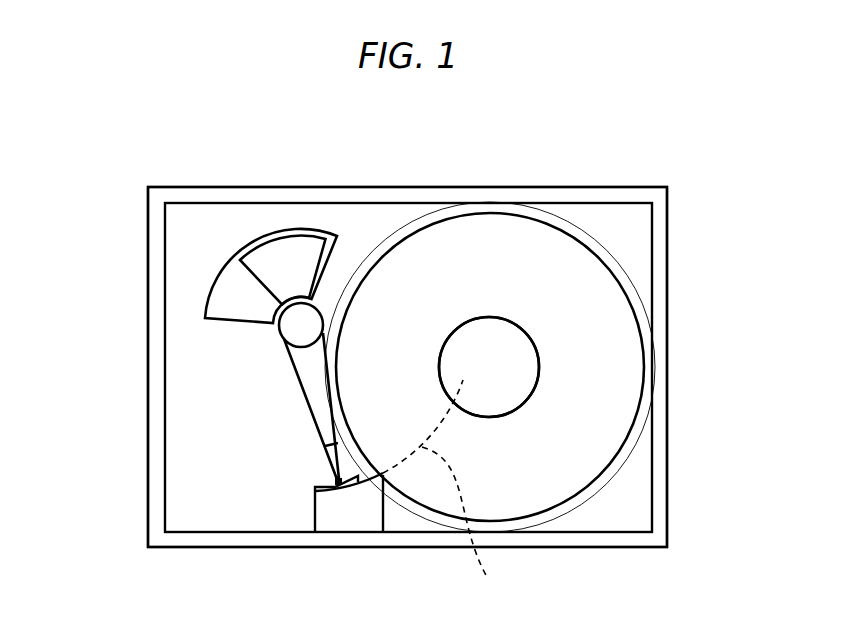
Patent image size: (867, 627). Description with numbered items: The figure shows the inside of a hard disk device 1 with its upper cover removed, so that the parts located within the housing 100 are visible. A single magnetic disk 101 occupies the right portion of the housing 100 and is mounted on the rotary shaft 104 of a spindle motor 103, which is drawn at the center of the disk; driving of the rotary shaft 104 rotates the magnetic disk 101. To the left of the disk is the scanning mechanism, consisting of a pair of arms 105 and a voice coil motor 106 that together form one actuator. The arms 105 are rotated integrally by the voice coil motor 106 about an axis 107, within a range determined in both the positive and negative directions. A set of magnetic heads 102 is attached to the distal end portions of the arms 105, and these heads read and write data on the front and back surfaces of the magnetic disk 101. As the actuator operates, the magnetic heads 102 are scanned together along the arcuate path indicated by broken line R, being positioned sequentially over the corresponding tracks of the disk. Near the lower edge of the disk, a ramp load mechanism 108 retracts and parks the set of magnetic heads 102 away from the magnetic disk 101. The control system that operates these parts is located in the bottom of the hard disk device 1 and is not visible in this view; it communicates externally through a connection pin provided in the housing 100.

The hard disk device 1 is at (601, 133).
The housing 100 is at (643, 187).
The magnetic disk 101 is at (610, 330).
The magnetic heads 102 is at (333, 497).
The spindle motor 103 is at (519, 352).
The rotary shaft 104 is at (504, 273).
The arms 105 is at (320, 387).
The voice coil motor 106 is at (220, 260).
The axis 107 is at (293, 335).
The ramp load mechanism 108 is at (365, 517).
The broken line R is at (458, 527).